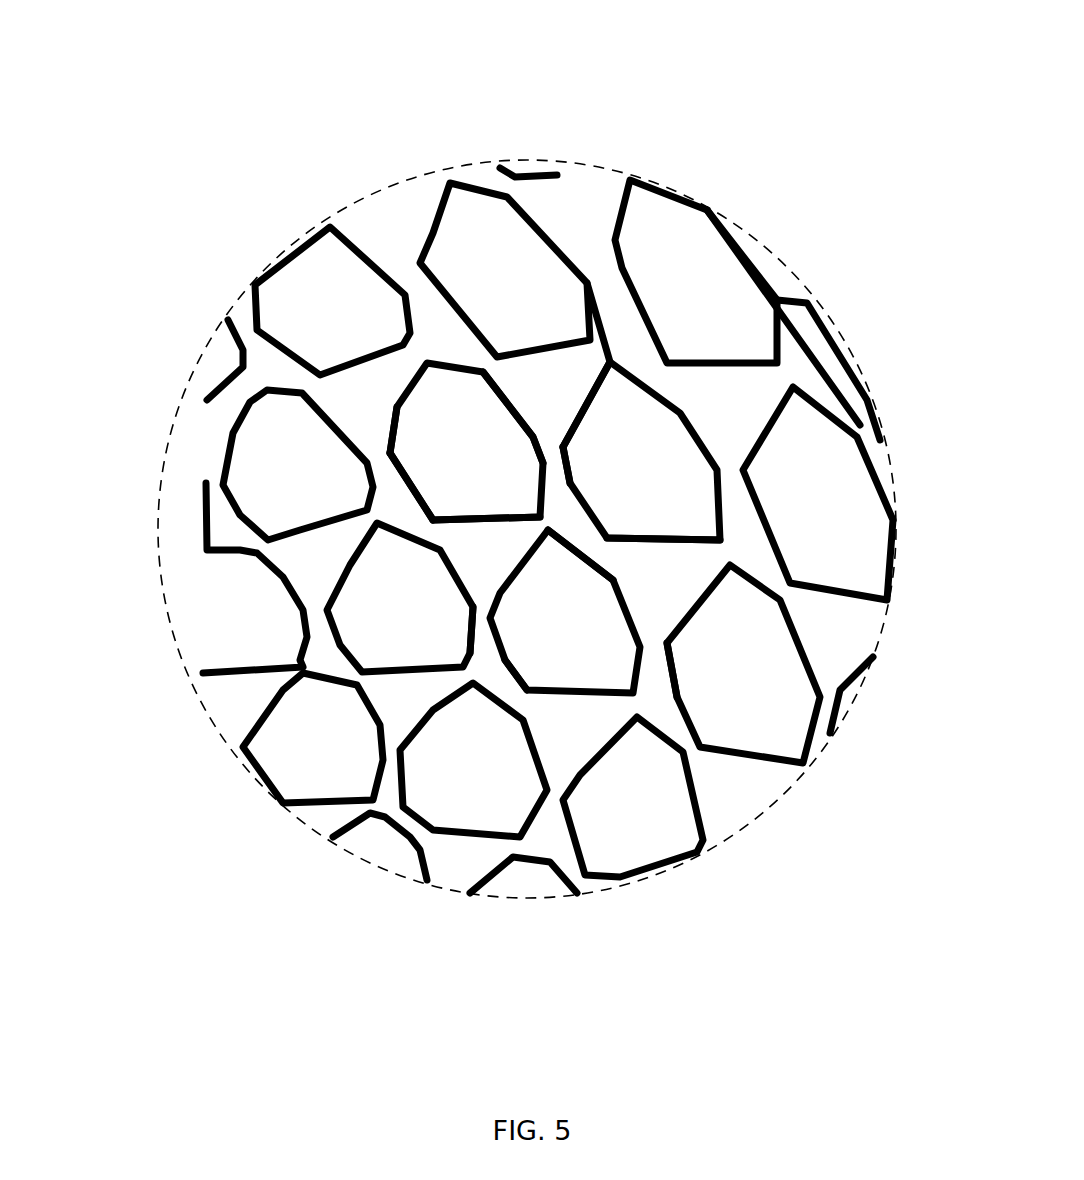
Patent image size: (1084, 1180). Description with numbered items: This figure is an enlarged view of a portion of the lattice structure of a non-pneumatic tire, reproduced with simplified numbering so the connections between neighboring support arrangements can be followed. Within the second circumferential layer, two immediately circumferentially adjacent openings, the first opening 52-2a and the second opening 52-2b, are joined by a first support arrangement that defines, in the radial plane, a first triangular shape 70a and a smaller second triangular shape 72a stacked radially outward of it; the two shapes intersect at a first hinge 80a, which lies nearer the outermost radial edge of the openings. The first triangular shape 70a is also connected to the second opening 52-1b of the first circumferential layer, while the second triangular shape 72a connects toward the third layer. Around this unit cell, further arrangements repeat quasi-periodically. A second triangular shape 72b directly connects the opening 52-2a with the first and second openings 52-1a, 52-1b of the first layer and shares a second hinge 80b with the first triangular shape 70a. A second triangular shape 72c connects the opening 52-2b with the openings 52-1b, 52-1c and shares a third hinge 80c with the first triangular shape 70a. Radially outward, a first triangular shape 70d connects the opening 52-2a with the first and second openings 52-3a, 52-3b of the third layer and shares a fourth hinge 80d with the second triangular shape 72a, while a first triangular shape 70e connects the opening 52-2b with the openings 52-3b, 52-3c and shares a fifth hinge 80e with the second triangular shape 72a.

The third opening of the third circumferential layer 52-3c is at (508, 253).
The second opening of the third circumferential layer 52-3b is at (648, 403).
The first opening of the third circumferential layer 52-3a is at (778, 690).
The first opening of the second circumferential layer 52-2a is at (572, 633).
The second opening of the second circumferential layer 52-2b is at (425, 415).
The first opening of the first circumferential layer 52-1a is at (455, 795).
The second opening of the first circumferential layer 52-1b is at (373, 612).
The third opening of the first circumferential layer 52-1c is at (300, 480).
The first triangular shape 70a is at (487, 548).
The first triangular shape of the fourth support arrangement 70d is at (653, 600).
The first triangular shape of the fifth support arrangement 70e is at (558, 385).
The second triangular shape 72a is at (560, 497).
The second triangular shape of the second support arrangement 72b is at (490, 657).
The second triangular shape of the third support arrangement 72c is at (393, 500).
The first hinge 80a is at (545, 522).
The second hinge 80b is at (483, 620).
The third hinge 80c is at (427, 533).
The fourth hinge 80d is at (600, 545).
The fifth hinge 80e is at (550, 455).